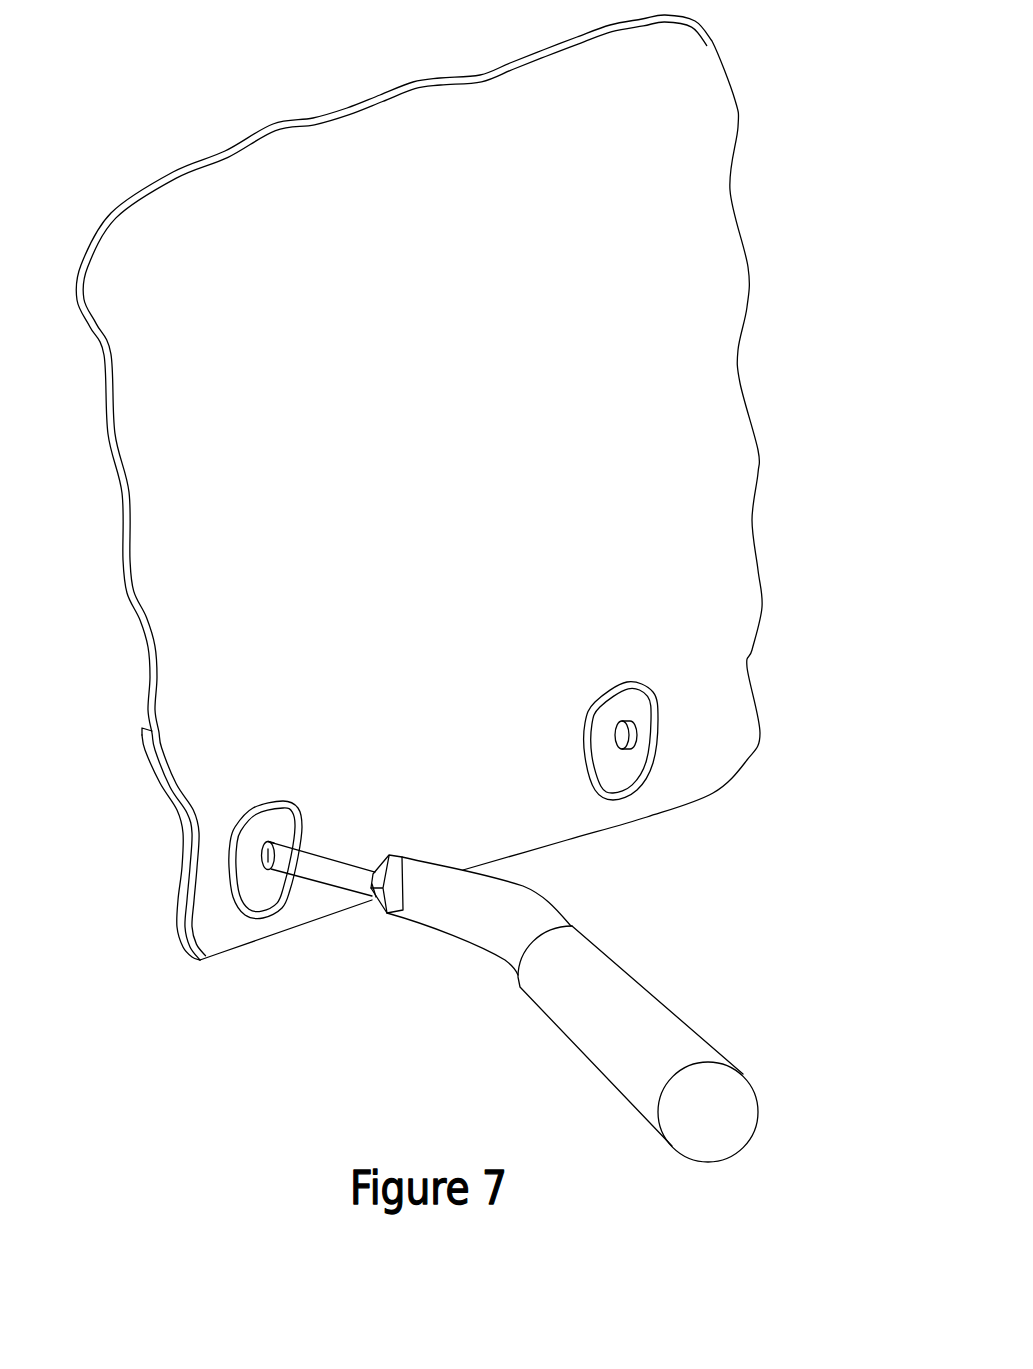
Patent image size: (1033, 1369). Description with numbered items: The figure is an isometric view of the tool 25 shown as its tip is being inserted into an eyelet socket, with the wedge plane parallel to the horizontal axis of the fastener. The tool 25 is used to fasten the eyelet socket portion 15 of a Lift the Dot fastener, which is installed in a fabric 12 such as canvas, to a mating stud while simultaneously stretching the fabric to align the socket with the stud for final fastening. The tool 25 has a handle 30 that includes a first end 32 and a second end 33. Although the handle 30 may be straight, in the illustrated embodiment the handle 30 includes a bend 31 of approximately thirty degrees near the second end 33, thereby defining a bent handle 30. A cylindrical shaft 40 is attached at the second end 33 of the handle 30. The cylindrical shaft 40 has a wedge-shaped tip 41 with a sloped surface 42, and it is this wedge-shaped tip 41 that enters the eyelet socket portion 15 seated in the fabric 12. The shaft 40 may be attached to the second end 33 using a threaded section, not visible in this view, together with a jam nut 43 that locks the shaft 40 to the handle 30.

The fabric 12 is at (123, 592).
The eyelet socket portion 15 is at (620, 683).
The tool 25 is at (586, 989).
The handle 30 is at (659, 1069).
The bend 31 is at (513, 912).
The first end 32 is at (700, 1162).
The second end 33 is at (403, 850).
The cylindrical shaft 40 is at (318, 868).
The wedge-shaped tip 41 is at (278, 834).
The sloped surface 42 is at (279, 853).
The jam nut 43 is at (376, 897).